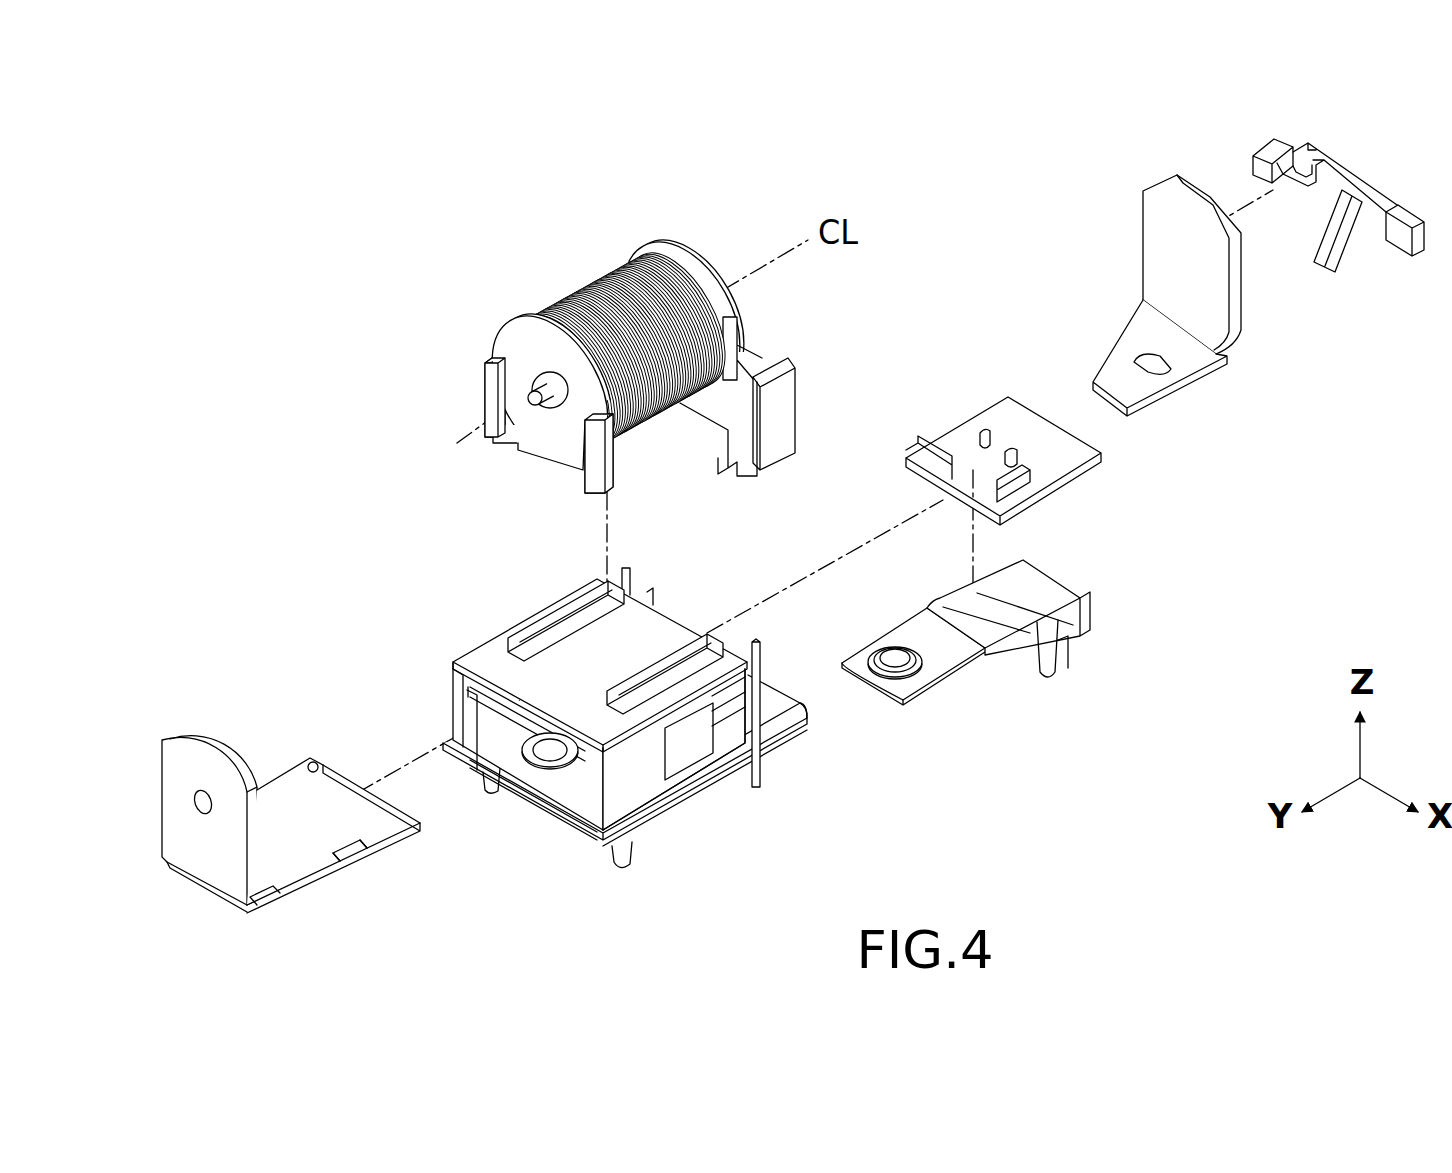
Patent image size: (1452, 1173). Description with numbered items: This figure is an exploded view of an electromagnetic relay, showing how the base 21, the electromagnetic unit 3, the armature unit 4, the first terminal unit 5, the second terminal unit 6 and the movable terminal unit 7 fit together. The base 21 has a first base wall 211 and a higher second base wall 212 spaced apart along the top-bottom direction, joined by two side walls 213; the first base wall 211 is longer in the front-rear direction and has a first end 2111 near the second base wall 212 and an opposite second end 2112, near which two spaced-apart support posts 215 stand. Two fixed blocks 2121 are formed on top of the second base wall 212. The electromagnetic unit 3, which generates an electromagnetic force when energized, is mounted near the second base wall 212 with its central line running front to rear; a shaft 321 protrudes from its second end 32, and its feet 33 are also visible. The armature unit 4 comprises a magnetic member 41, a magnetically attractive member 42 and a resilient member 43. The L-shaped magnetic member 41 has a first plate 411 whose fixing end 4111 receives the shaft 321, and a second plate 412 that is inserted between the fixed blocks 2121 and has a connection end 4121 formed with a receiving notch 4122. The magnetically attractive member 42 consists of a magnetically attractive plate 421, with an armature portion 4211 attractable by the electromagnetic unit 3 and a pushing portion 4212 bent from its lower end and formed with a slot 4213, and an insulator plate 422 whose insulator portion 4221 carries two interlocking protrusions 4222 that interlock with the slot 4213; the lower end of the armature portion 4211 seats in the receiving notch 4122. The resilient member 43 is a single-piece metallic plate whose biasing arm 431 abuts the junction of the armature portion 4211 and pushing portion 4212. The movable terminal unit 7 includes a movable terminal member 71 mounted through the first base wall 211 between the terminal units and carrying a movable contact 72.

The electromagnetic unit 3 is at (619, 341).
The second end 32 is at (500, 342).
The shaft 321 is at (532, 372).
The bobbin feet 33 is at (710, 410).
The base 21 is at (626, 724).
The first base wall 211 is at (625, 760).
The first end 2111 is at (607, 836).
The second end 2112 is at (815, 703).
The second base wall 212 is at (597, 704).
The fixed blocks 2121 is at (553, 610).
The side walls 213 is at (446, 702).
The support posts 215 is at (762, 690).
The first terminal unit 5 is at (538, 795).
The second terminal unit 6 is at (506, 730).
The movable terminal unit 7 is at (966, 657).
The movable terminal member 71 is at (902, 628).
The movable contact 72 is at (897, 665).
The armature unit 4 is at (1166, 307).
The magnetic member 41 is at (283, 806).
The first plate 411 is at (199, 806).
The fixing end 4111 is at (177, 757).
The second plate 412 is at (350, 800).
The connection end 4121 is at (377, 830).
The receiving notch 4122 is at (329, 766).
The magnetically attractive member 42 is at (1133, 358).
The magnetically attractive plate 421 is at (1196, 313).
The armature portion 4211 is at (1203, 285).
The pushing portion 4212 is at (1210, 376).
The slot 4213 is at (1156, 367).
The insulator plate 422 is at (1053, 424).
The insulator portion 4221 is at (1030, 510).
The interlocking protrusions 4222 is at (985, 432).
The resilient member 43 is at (1339, 188).
The biasing arm 431 is at (1331, 265).